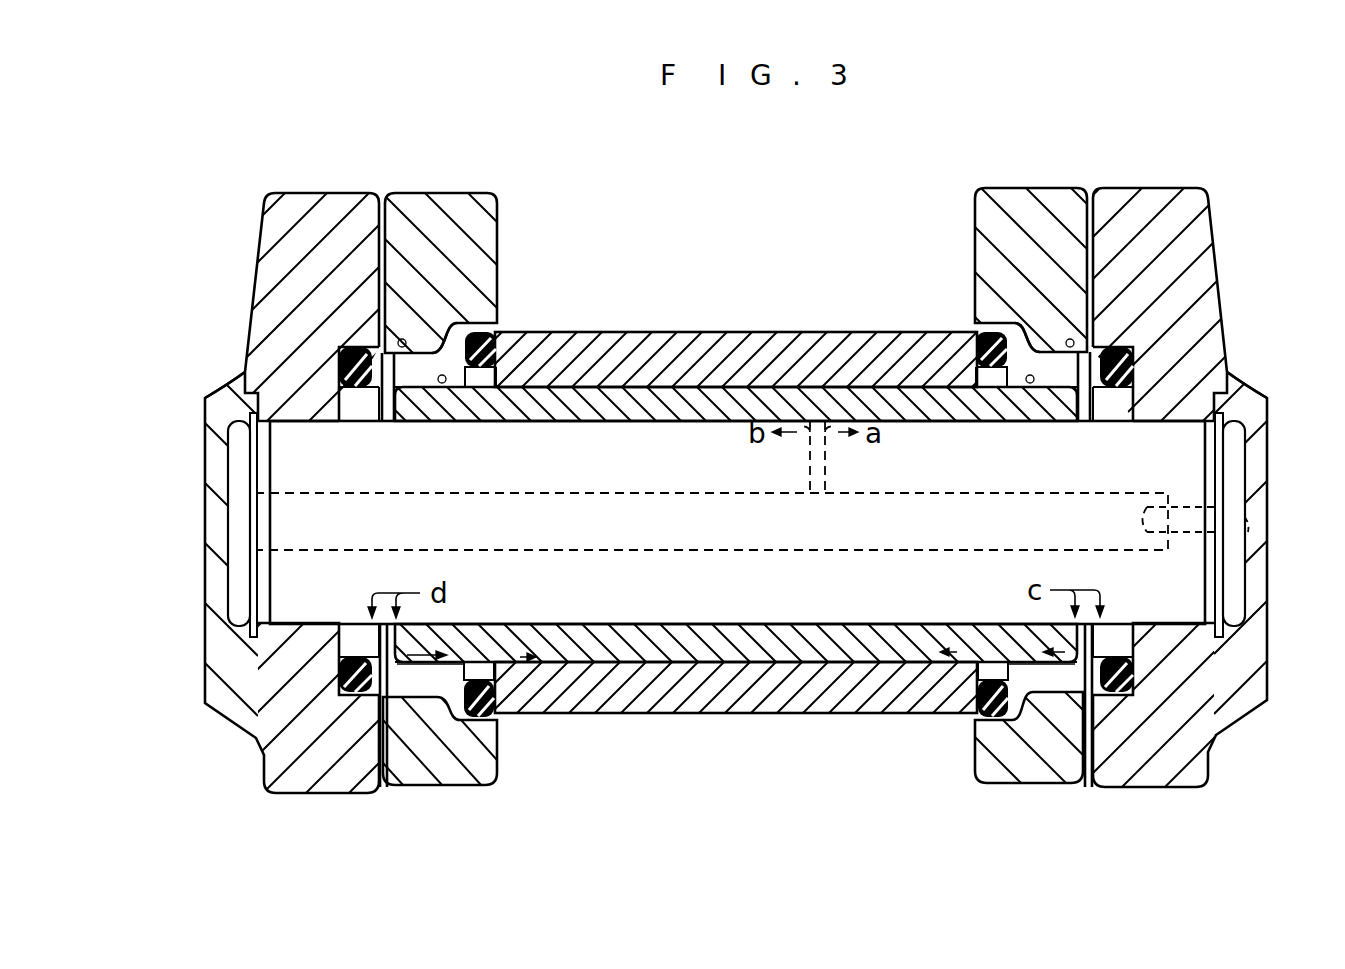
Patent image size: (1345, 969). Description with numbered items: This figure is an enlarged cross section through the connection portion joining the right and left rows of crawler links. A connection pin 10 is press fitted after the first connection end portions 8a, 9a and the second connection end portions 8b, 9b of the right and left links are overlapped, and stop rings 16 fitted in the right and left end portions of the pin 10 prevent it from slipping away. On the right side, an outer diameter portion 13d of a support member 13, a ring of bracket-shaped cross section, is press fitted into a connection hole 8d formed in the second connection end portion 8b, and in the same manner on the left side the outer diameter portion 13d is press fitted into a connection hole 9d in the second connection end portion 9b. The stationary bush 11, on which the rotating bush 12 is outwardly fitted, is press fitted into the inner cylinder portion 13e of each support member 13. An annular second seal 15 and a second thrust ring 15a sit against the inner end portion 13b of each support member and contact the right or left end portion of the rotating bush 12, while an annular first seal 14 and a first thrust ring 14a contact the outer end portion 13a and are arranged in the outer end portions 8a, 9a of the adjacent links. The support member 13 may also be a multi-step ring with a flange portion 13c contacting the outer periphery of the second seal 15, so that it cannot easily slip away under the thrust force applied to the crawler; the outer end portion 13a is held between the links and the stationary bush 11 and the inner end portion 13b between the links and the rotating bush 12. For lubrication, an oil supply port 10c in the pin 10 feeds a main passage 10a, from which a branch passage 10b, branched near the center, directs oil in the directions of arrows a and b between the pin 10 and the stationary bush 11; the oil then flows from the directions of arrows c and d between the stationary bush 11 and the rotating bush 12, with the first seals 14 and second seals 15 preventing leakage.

The first connection end portion 8a is at (1140, 205).
The second connection end portion 8b is at (1014, 210).
The connection hole 8d is at (1045, 335).
The first connection end portion 9a is at (306, 195).
The second connection end portion 9b is at (427, 198).
The connection hole 9d is at (437, 335).
The connection pin 10 is at (1167, 432).
The main passage 10a is at (920, 552).
The branch passage 10b is at (826, 465).
The oil supply port 10c is at (1252, 530).
The stationary bush 11 is at (765, 655).
The rotating bush 12 is at (700, 708).
The support member 13 is at (421, 690).
The outer end portion 13a is at (423, 683).
The inner end portion 13b is at (478, 715).
The flange portion 13c is at (497, 333).
The outer diameter portion 13d is at (386, 421).
The inner cylinder portion 13e is at (444, 383).
The first seal 14 is at (1140, 347).
The first thrust ring 14a is at (1185, 370).
The second seal 15 is at (492, 718).
The second thrust ring 15a is at (535, 715).
The stop ring 16 is at (1238, 443).